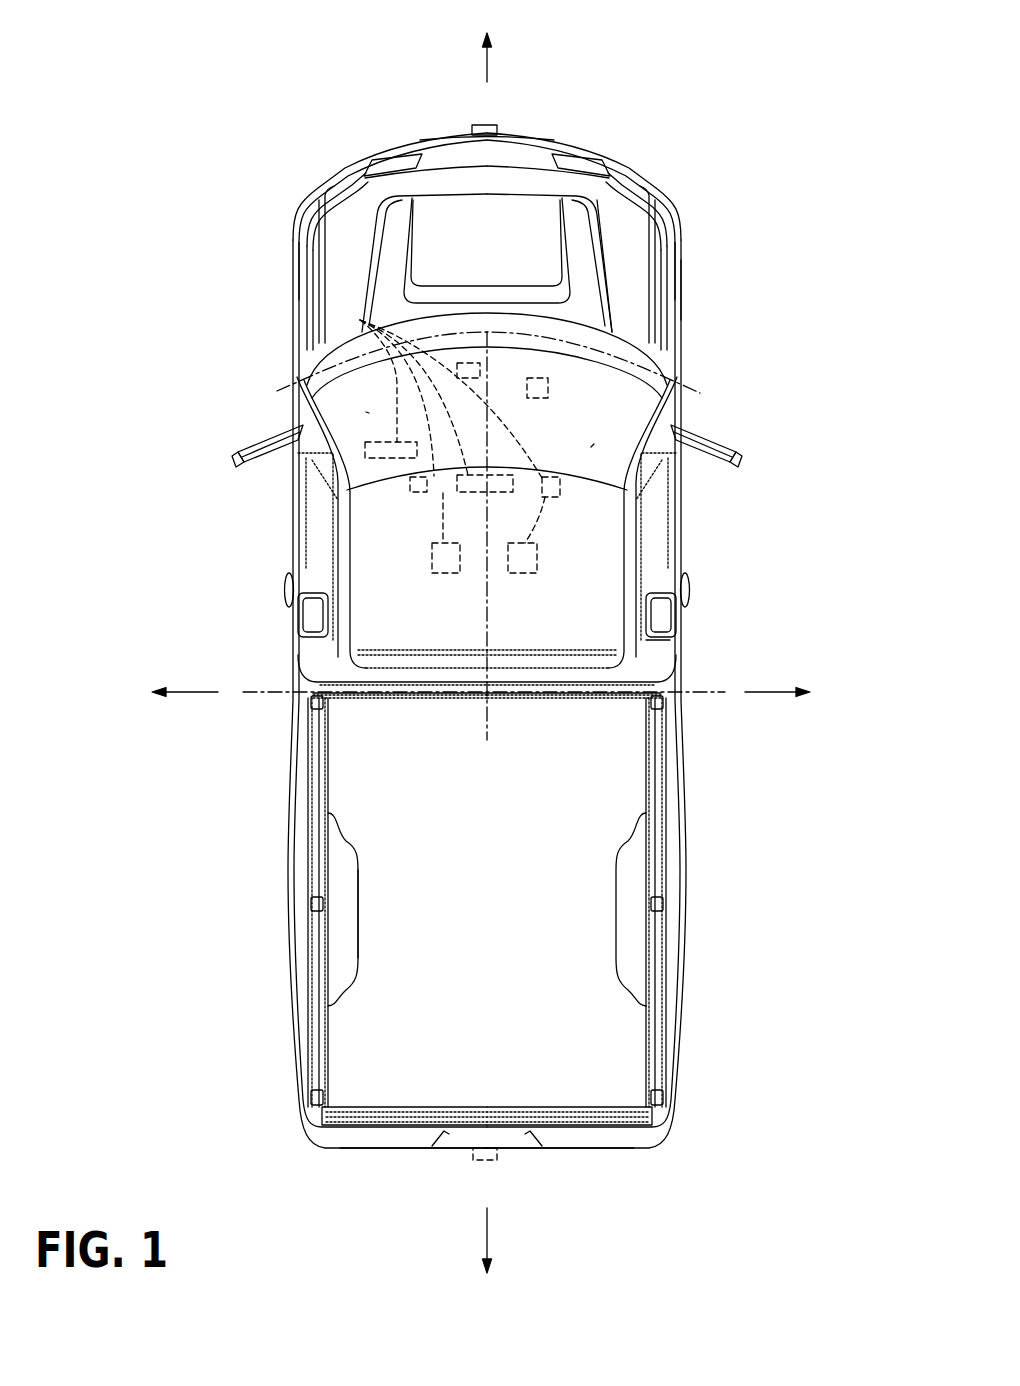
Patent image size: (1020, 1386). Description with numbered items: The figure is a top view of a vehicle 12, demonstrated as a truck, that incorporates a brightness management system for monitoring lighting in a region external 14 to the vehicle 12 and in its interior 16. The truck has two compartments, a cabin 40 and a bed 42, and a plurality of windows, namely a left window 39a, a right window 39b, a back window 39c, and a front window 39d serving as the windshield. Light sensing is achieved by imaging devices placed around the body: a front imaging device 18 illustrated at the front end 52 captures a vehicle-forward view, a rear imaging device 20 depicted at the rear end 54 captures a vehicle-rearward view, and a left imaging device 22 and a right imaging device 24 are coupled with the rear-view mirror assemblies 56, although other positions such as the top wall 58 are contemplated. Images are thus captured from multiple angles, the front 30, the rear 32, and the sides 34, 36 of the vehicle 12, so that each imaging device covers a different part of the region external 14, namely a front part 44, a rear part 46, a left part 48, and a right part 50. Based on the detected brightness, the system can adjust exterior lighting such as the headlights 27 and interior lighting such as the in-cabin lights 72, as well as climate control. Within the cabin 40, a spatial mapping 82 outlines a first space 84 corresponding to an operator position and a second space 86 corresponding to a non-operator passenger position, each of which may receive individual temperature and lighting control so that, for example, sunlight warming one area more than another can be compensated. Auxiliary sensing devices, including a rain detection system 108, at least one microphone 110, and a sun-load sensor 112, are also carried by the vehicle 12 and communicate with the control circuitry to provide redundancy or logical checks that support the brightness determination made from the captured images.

The vehicle 12 is at (683, 292).
The region external 14 is at (188, 125).
The interior 16 is at (597, 442).
The front imaging device 18 is at (487, 126).
The rear imaging device 20 is at (485, 1162).
The left imaging device 22 is at (243, 460).
The right imaging device 24 is at (738, 460).
The headlights 27 is at (343, 168).
The front 30 is at (481, 70).
The rear 32 is at (484, 1227).
The side 34 is at (195, 698).
The side 36 is at (763, 698).
The left window 39a is at (597, 394).
The right window 39b is at (520, 692).
The back window 39c is at (323, 568).
The front window 39d is at (640, 568).
The cabin 40 is at (357, 412).
The bed 42 is at (424, 922).
The front part 44 is at (608, 25).
The rear part 46 is at (608, 1301).
The left part 48 is at (48, 685).
The right part 50 is at (881, 685).
The front end 52 is at (552, 136).
The rear end 54 is at (452, 1148).
The rear-view mirror assemblies 56 is at (252, 440).
The top wall 58 is at (620, 587).
The in-cabin lights 72 is at (360, 320).
The spatial mapping 82 is at (278, 702).
The first space 84 is at (325, 600).
The second space 86 is at (615, 621).
The rain detection system 108 is at (542, 378).
The microphone 110 is at (560, 494).
The sun-load sensor 112 is at (473, 363).